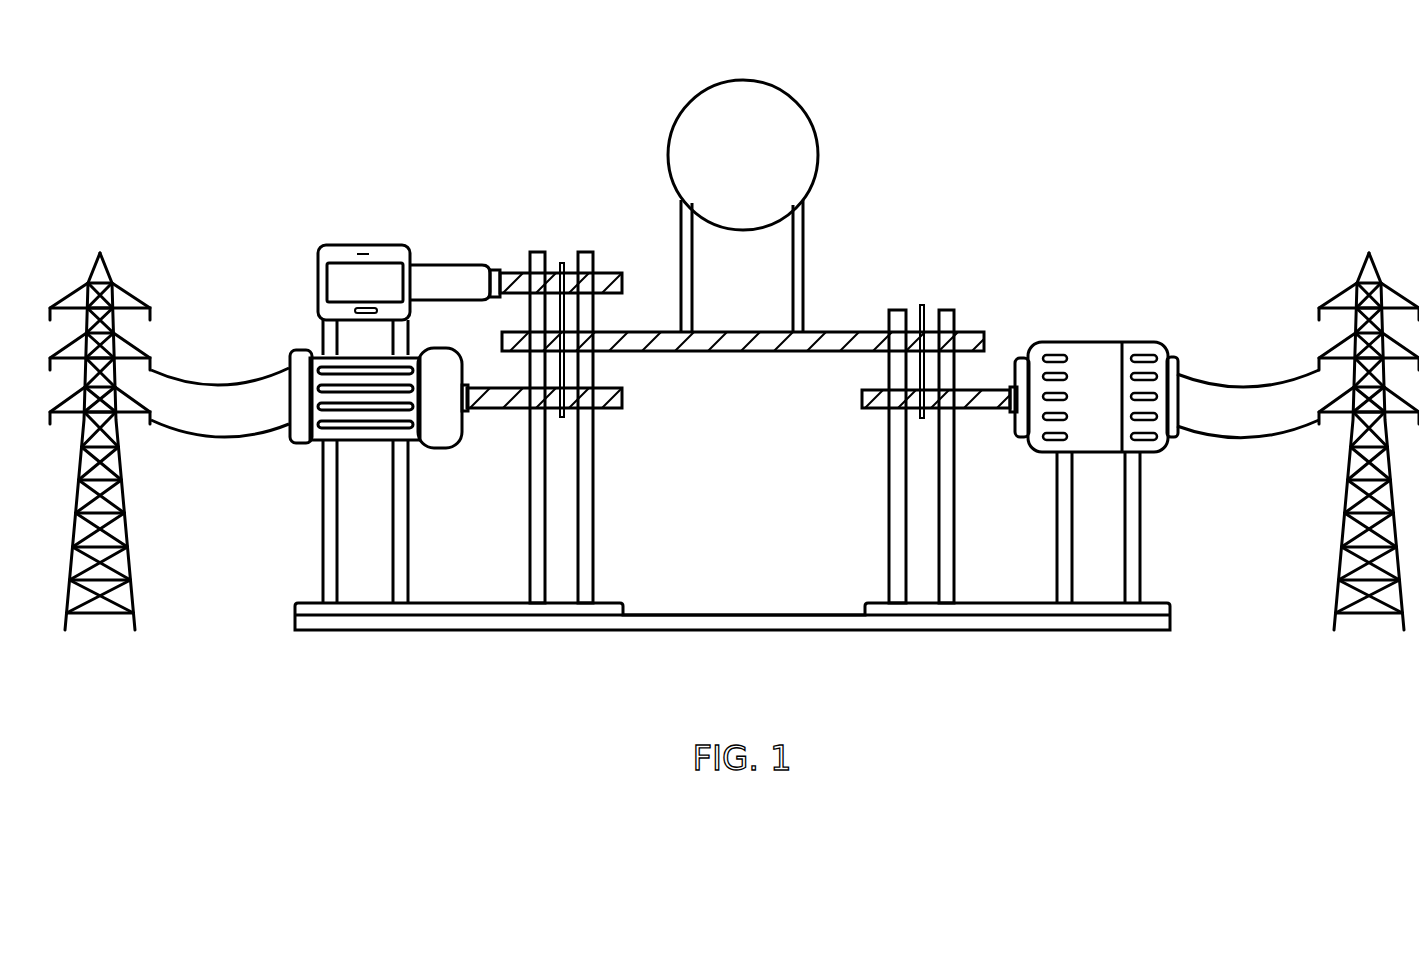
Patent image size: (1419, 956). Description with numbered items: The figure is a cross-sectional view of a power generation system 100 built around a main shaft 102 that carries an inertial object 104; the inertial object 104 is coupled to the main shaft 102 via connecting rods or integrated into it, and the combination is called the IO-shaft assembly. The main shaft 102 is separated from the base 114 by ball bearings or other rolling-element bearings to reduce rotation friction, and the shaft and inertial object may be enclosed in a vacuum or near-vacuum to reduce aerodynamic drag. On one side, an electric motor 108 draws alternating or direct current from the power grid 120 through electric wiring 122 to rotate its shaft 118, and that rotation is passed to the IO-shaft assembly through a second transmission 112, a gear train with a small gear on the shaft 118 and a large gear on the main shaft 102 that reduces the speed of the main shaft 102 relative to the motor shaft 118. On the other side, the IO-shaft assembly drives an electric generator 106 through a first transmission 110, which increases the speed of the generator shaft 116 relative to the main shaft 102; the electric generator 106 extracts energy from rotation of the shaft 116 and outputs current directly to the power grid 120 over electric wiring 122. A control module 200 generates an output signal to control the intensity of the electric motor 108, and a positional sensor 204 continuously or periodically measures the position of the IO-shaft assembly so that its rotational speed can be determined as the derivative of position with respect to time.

The power generation system 100 is at (718, 458).
The main shaft 102 is at (853, 331).
The inertial object 104 is at (742, 114).
The electric generator 106 is at (1093, 343).
The electric motor 108 is at (443, 448).
The first transmission 110 is at (922, 305).
The second transmission 112 is at (562, 263).
The base 114 is at (735, 613).
The electric generator shaft 116 is at (983, 412).
The electric motor shaft 118 is at (498, 410).
The power grid 120 is at (102, 253).
The electric wiring 122 is at (218, 383).
The control module 200 is at (365, 245).
The positional sensor 204 is at (452, 265).